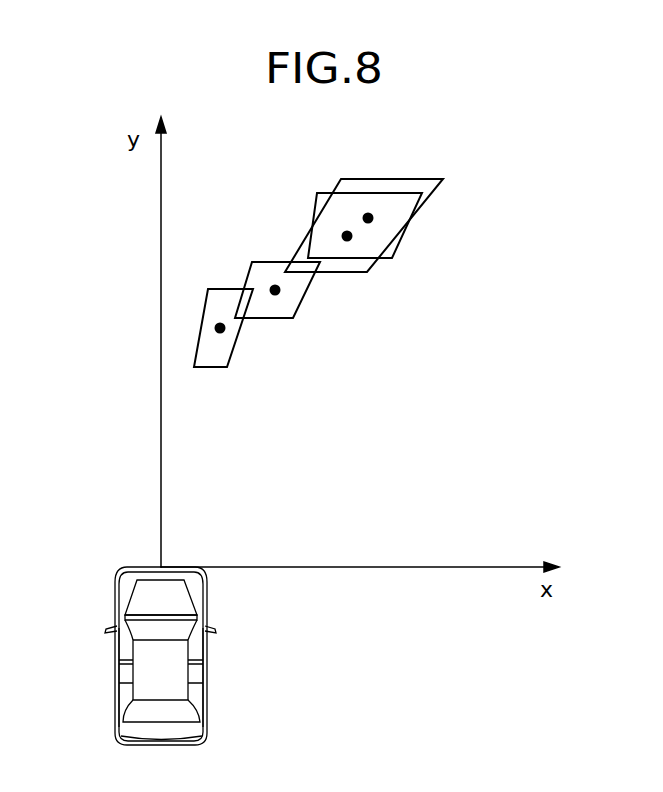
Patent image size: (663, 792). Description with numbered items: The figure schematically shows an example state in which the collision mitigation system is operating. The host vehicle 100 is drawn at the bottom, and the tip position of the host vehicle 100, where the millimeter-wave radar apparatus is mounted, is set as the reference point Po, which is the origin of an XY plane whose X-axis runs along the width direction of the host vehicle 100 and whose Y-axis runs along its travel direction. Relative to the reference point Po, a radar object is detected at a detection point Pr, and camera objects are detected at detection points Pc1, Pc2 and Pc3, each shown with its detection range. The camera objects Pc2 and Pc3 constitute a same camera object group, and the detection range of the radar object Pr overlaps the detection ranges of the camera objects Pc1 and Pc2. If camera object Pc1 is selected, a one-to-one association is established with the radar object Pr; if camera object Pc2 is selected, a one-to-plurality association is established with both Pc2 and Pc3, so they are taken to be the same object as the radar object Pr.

The detection point of camera object Pc3 is at (373, 218).
The detection point of camera object Pc2 is at (352, 236).
The detection point of radar object Pr is at (280, 291).
The detection point of camera object Pc1 is at (215, 328).
The reference point Po is at (158, 567).
The host vehicle 100 is at (207, 627).